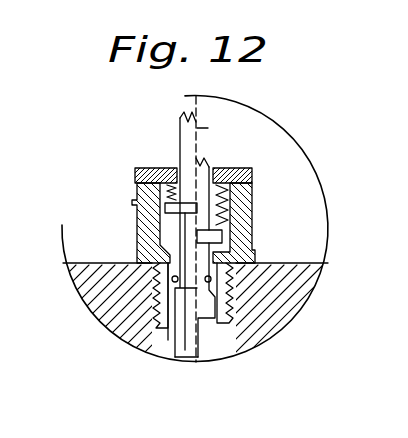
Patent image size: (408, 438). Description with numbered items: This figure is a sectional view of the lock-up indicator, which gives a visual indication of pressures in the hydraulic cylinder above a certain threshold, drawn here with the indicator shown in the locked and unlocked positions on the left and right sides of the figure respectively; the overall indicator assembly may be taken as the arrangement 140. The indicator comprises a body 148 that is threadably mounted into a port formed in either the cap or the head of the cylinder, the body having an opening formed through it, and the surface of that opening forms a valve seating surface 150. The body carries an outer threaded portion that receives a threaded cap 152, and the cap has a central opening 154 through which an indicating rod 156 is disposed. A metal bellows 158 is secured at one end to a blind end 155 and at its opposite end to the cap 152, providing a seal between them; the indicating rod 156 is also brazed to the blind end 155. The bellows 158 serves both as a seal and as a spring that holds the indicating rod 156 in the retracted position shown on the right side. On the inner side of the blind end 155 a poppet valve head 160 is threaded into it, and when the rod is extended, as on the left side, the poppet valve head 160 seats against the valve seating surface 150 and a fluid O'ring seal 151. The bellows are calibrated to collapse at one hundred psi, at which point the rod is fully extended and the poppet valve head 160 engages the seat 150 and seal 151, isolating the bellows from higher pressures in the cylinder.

The sampling device 140 is at (237, 130).
The body 148 is at (228, 258).
The valve seating surface 150 is at (242, 300).
The fluid O'ring seal 151 is at (157, 262).
The threaded cap 152 is at (243, 166).
The central opening 154 is at (181, 147).
The blind end 155 is at (232, 236).
The indicating rod 156 is at (197, 136).
The metal bellows 158 is at (223, 206).
The poppet valve head 160 is at (210, 338).